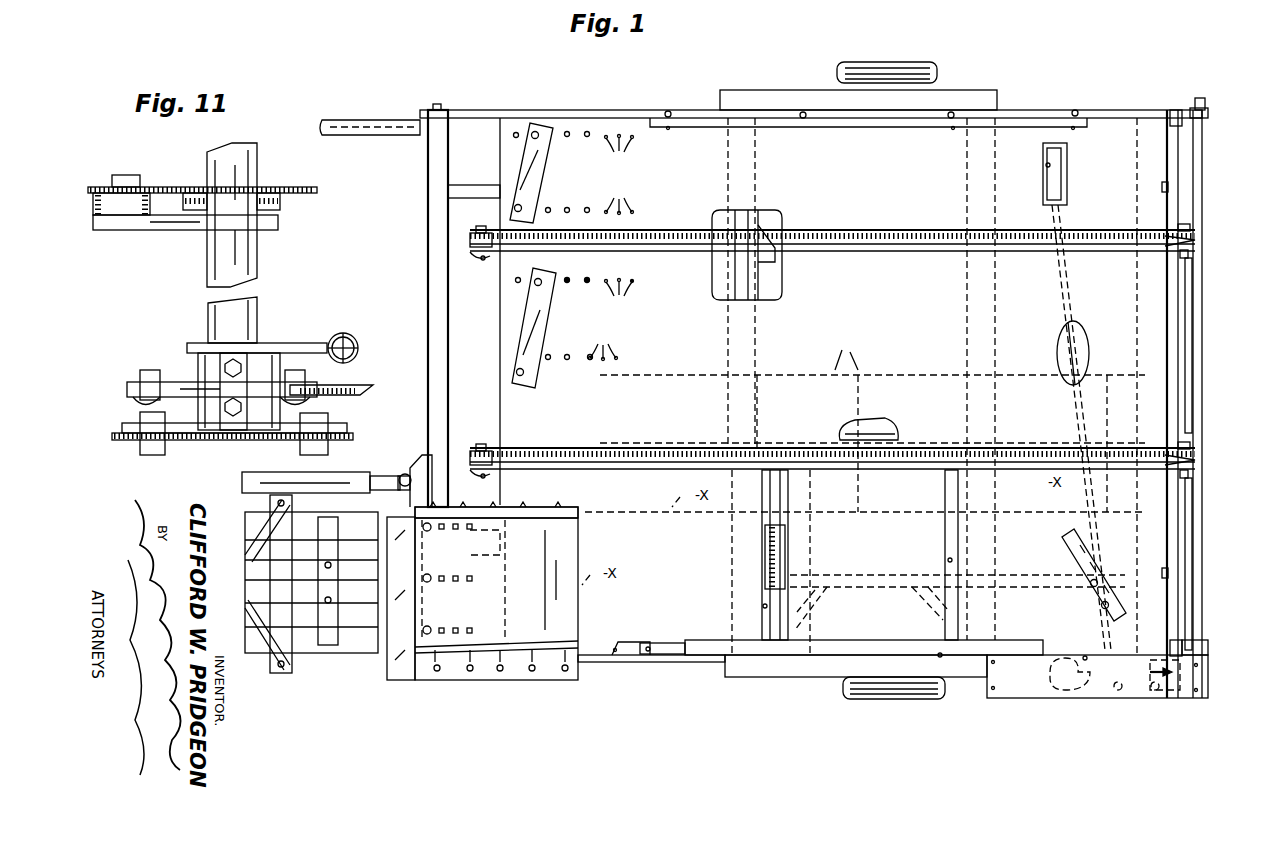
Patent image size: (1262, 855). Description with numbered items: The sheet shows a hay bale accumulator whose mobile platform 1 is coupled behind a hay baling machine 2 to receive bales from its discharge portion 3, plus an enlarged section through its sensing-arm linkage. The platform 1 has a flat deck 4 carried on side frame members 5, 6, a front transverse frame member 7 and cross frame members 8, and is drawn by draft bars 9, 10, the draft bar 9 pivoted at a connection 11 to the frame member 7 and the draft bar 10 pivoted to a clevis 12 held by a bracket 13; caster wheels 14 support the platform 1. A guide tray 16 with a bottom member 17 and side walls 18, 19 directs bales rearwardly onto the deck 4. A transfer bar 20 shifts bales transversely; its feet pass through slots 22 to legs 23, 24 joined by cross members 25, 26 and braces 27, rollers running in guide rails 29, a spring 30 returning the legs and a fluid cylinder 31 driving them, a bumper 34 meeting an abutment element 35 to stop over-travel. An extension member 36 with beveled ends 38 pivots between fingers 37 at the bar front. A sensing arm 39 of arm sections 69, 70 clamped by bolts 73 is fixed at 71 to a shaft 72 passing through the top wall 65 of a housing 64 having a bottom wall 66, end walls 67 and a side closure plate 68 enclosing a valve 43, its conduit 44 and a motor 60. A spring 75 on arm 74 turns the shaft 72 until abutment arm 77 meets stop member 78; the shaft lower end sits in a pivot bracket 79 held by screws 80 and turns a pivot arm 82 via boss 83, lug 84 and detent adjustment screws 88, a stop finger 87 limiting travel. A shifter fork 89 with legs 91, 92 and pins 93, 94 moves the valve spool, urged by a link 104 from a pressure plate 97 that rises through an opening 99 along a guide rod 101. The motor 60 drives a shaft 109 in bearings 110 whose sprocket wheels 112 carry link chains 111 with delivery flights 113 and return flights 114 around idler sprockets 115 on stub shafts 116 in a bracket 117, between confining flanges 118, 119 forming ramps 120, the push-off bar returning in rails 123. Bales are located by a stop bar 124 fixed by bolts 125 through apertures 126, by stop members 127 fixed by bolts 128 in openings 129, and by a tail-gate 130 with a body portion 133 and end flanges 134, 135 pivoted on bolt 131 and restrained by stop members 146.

In FIG. 1, the mobile platform 1 is at (670, 98).
In FIG. 1, the hay baling machine 2 is at (308, 683).
In FIG. 1, the discharge portion 3 is at (345, 655).
In FIG. 1, the deck 4 is at (1057, 110).
In FIG. 1, the side frame member 5 is at (585, 110).
In FIG. 1, the side frame member 6 is at (600, 663).
In FIG. 1, the front transverse frame member 7 is at (428, 250).
In FIG. 1, the cross frame members 8 is at (728, 290).
In FIG. 1, the draft bar 9 is at (358, 130).
In FIG. 1, the draft bar 10 is at (352, 476).
In FIG. 1, the pivotal connection 11 is at (437, 104).
In FIG. 1, the clevis 12 is at (403, 474).
In FIG. 1, the bracket 13 is at (420, 455).
In FIG. 1, the caster wheels 14 is at (900, 62).
In FIG. 11, the caster wheels 14 is at (130, 357).
In FIG. 1, the bale receiving guide tray 16 is at (580, 560).
In FIG. 1, the bottom member 17 is at (540, 568).
In FIG. 1, the side wall 18 is at (518, 507).
In FIG. 1, the side wall 19 is at (520, 645).
In FIG. 1, the transfer bar 20 is at (858, 640).
In FIG. 1, the transverse slots 22 is at (762, 606).
In FIG. 1, the leg 23 is at (790, 494).
In FIG. 1, the leg 24 is at (945, 492).
In FIG. 1, the cross member 25 is at (868, 430).
In FIG. 1, the cross member 26 is at (866, 575).
In FIG. 1, the angular braces 27 is at (928, 625).
In FIG. 1, the guide rails 29 is at (760, 355).
In FIG. 1, the coil tension spring 30 is at (762, 560).
In FIG. 1, the fluid cylinder 31 is at (785, 545).
In FIG. 1, the bumper 34 is at (780, 418).
In FIG. 1, the abutment element 35 is at (780, 262).
In FIG. 1, the extension member 36 is at (625, 642).
In FIG. 1, the fingers 37 is at (664, 643).
In FIG. 1, the beveled ends 38 is at (620, 645).
In FIG. 1, the bale sensing element 39 is at (1108, 591).
In FIG. 1, the valve 43 is at (1085, 655).
In FIG. 1, the conduit 44 is at (1050, 690).
In FIG. 1, the motor 60 is at (1180, 698).
In FIG. 1, the protective housing 64 is at (1080, 700).
In FIG. 1, the top wall 65 is at (1020, 690).
In FIG. 11, the top wall 65 is at (295, 187).
In FIG. 11, the bottom wall 66 is at (203, 440).
In FIG. 1, the end walls 67 is at (988, 690).
In FIG. 1, the side closure plate 68 is at (1075, 700).
In FIG. 1, the arm section 69 is at (1112, 608).
In FIG. 1, the arm section 70 is at (1082, 545).
In FIG. 1, the rigid connection 71 is at (1128, 665).
In FIG. 11, the shaft 72 is at (255, 290).
In FIG. 1, the clamping bolts 73 is at (1100, 606).
In FIG. 11, the arm 74 is at (312, 343).
In FIG. 11, the coil tension spring 75 is at (345, 334).
In FIG. 11, the abutment arm 77 is at (168, 232).
In FIG. 11, the stop member 78 is at (128, 218).
In FIG. 11, the pivot bracket 79 is at (135, 440).
In FIG. 11, the nut-equipped screws 80 is at (330, 420).
In FIG. 11, the pivot arm 82 is at (185, 400).
In FIG. 11, the boss 83 is at (262, 355).
In FIG. 11, the lug 84 is at (218, 372).
In FIG. 11, the stop finger 87 is at (290, 440).
In FIG. 11, the adjustment screws 88 is at (233, 360).
In FIG. 11, the shifter fork 89 is at (318, 380).
In FIG. 11, the leg 91 is at (305, 385).
In FIG. 11, the leg 92 is at (130, 385).
In FIG. 11, the pin 93 is at (295, 370).
In FIG. 11, the pin 94 is at (150, 370).
In FIG. 1, the pressure plate 97 is at (1058, 170).
In FIG. 1, the opening 99 is at (1045, 168).
In FIG. 1, the guide rod 101 is at (1052, 132).
In FIG. 1, the link 104 is at (1078, 348).
In FIG. 11, the link 104 is at (372, 386).
In FIG. 1, the drive shaft 109 is at (1190, 255).
In FIG. 1, the bearings 110 is at (1195, 242).
In FIG. 1, the link chains 111 is at (678, 230).
In FIG. 1, the sprocket wheels 112 is at (1188, 226).
In FIG. 1, the delivery flight 113 is at (925, 245).
In FIG. 1, the return flight 114 is at (790, 232).
In FIG. 1, the idler sprockets 115 is at (478, 232).
In FIG. 1, the stub shafts 116 is at (483, 262).
In FIG. 1, the bracket 117 is at (476, 254).
In FIG. 1, the confining flanges 118 is at (888, 238).
In FIG. 1, the confining flanges 119 is at (858, 230).
In FIG. 1, the ramps 120 is at (692, 250).
In FIG. 1, the supporting rails 123 is at (486, 185).
In FIG. 1, the stop bar 124 is at (905, 128).
In FIG. 1, the nut-equipped bolts 125 is at (670, 110).
In FIG. 1, the apertures 126 is at (668, 131).
In FIG. 1, the stop members 127 is at (540, 172).
In FIG. 1, the nut-equipped bolts 128 is at (540, 138).
In FIG. 1, the openings 129 is at (609, 266).
In FIG. 1, the tail-gate 130 is at (1204, 315).
In FIG. 1, the pivot bolt 131 is at (1205, 102).
In FIG. 1, the main body portion 133 is at (1200, 335).
In FIG. 1, the end flange 134 is at (1208, 115).
In FIG. 1, the end flange 135 is at (1208, 648).
In FIG. 1, the stop members 146 is at (1180, 110).